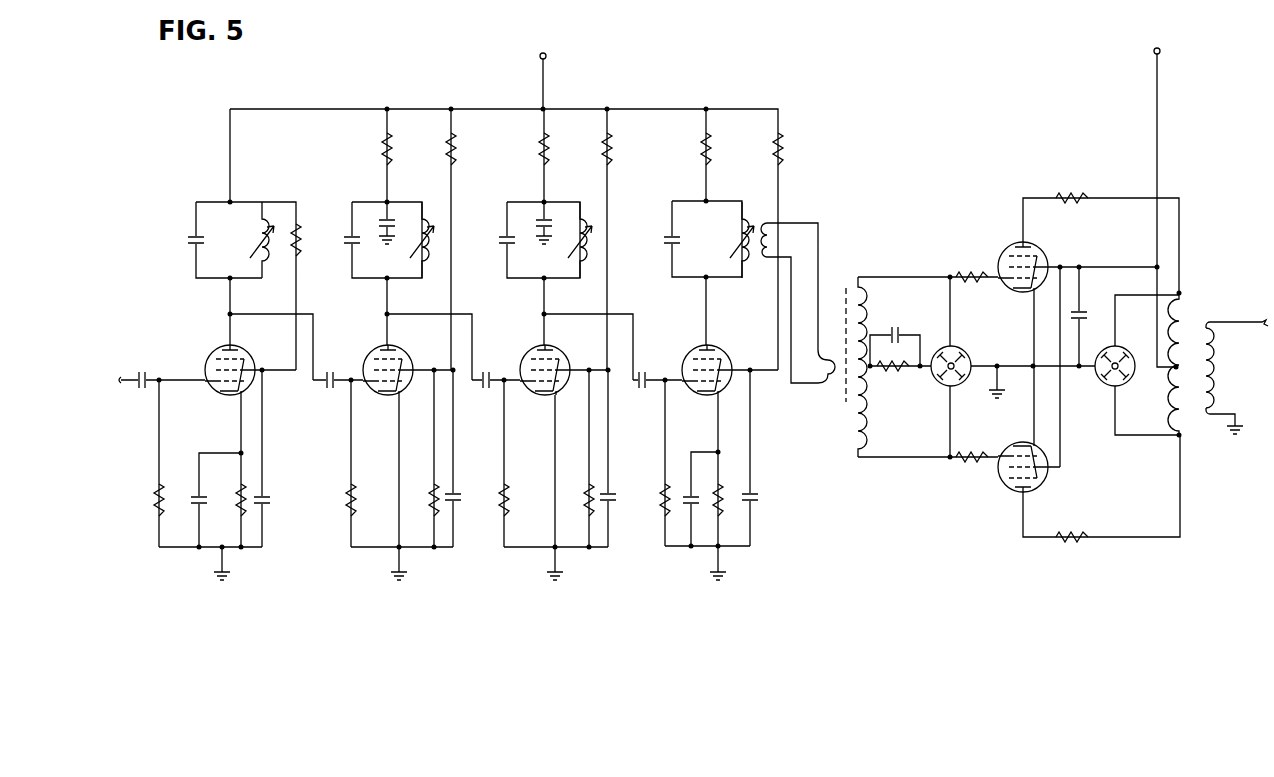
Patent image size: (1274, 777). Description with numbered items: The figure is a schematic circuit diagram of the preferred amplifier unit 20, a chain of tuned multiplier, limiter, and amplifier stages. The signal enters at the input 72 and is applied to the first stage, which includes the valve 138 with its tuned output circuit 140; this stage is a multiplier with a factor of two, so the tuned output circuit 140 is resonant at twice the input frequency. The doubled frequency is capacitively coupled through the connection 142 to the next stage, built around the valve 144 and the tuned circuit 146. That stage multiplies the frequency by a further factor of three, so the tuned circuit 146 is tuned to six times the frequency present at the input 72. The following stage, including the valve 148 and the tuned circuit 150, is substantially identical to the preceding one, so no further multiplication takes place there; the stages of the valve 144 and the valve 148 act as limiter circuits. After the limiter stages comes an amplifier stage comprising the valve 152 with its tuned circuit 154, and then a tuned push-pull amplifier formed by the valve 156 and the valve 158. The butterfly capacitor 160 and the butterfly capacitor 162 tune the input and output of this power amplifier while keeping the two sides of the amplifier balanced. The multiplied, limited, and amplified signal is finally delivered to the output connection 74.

The amplifier unit 20 is at (645, 595).
The input 72 is at (128, 378).
The output connection 74 is at (1246, 322).
The valve 138 is at (246, 354).
The tuned output circuit 140 is at (216, 250).
The connection 142 is at (338, 376).
The valve 144 is at (404, 355).
The tuned circuit 146 is at (371, 272).
The valve 148 is at (561, 355).
The tuned circuit 150 is at (528, 272).
The valve 152 is at (724, 355).
The tuned circuit 154 is at (692, 272).
The valve 156 is at (1045, 257).
The valve 158 is at (1046, 478).
The butterfly capacitor 160 is at (958, 348).
The butterfly capacitor 162 is at (1118, 348).